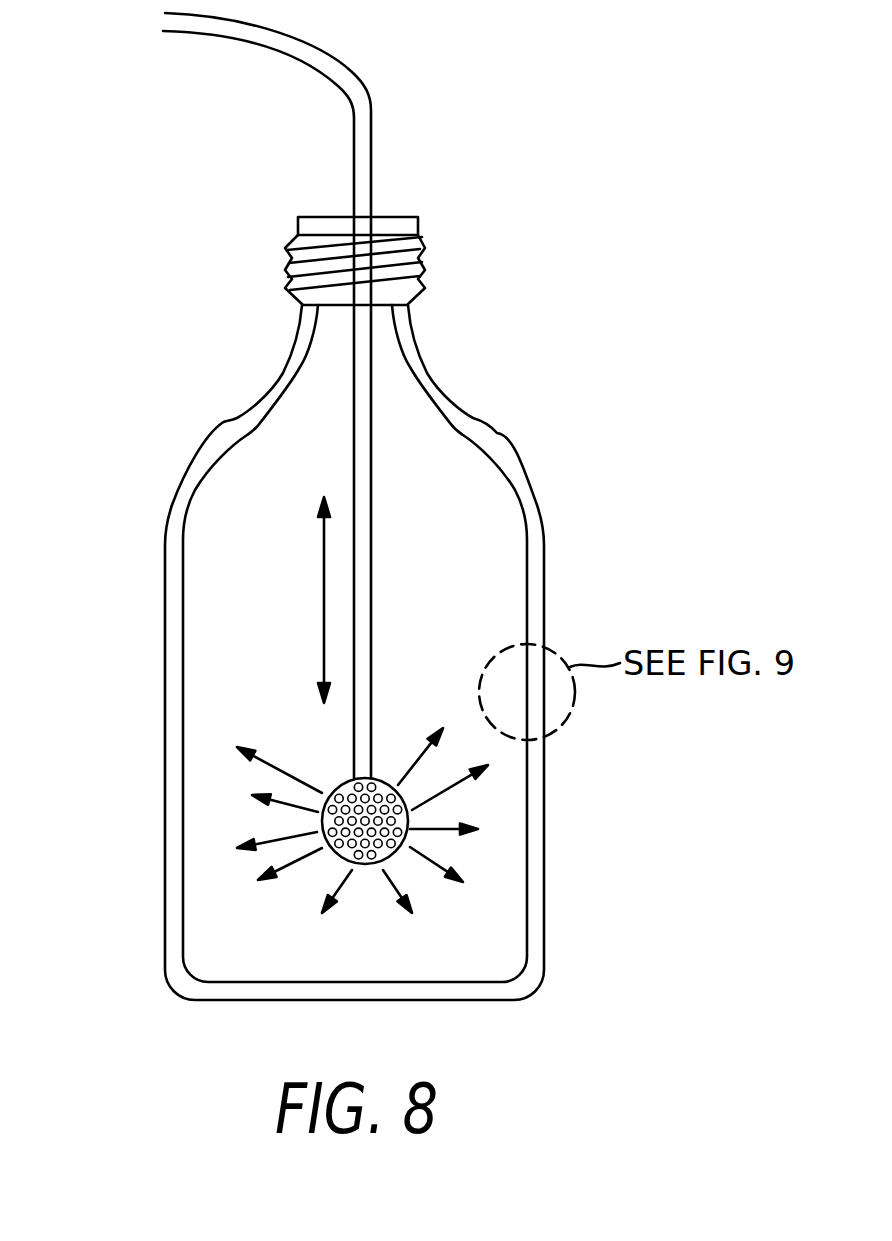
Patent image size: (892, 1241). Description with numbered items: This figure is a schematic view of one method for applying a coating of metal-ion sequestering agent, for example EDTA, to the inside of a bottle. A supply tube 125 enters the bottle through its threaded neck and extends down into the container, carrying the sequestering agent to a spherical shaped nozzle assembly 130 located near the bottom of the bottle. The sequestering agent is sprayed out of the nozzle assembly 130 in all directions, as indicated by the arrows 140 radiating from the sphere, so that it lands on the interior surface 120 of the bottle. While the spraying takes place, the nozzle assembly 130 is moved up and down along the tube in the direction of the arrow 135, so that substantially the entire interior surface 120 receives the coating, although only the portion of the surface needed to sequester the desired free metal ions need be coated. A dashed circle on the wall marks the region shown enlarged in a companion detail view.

The supply tube 125 is at (228, 38).
The interior surface 120 is at (510, 589).
The arrow 135 is at (324, 598).
The spherical shaped nozzle assembly 130 is at (407, 838).
The arrows 140 is at (278, 768).